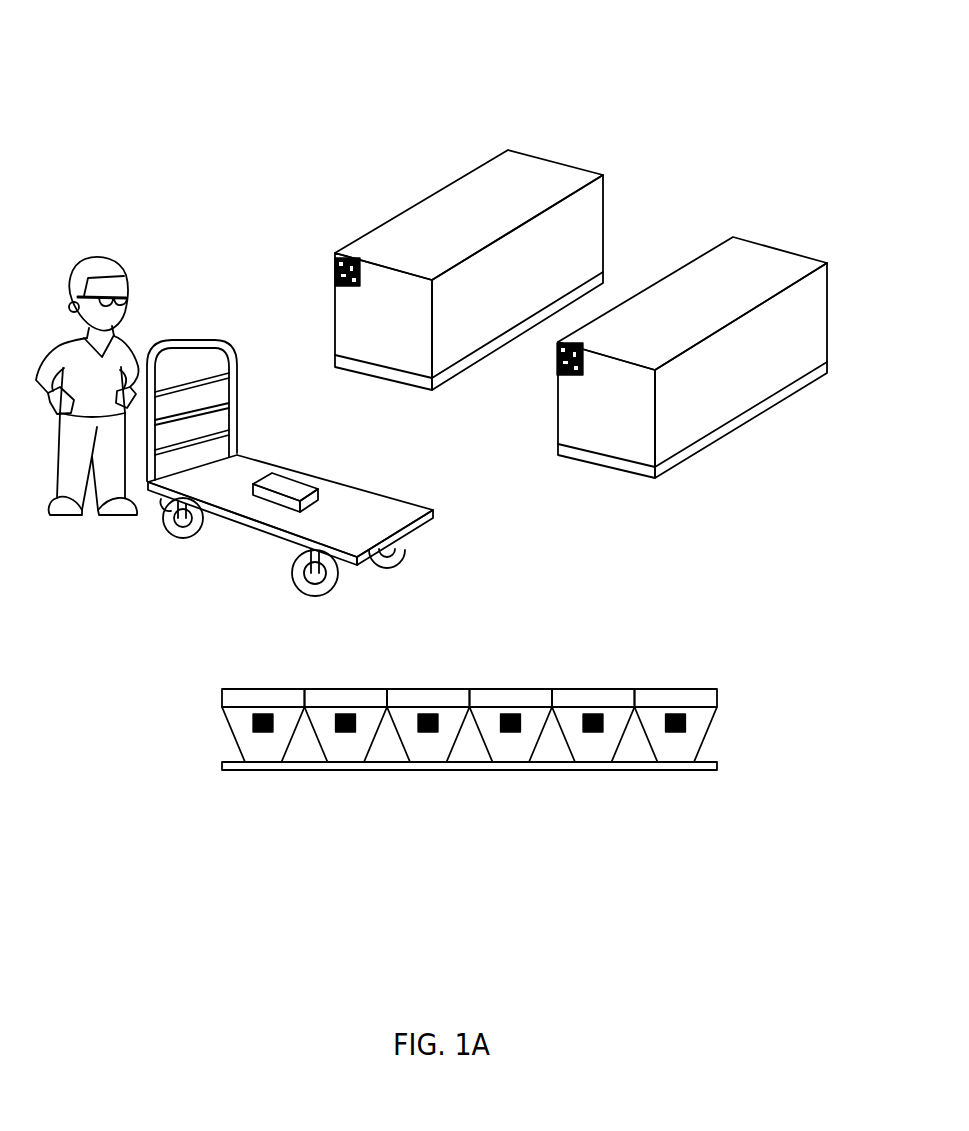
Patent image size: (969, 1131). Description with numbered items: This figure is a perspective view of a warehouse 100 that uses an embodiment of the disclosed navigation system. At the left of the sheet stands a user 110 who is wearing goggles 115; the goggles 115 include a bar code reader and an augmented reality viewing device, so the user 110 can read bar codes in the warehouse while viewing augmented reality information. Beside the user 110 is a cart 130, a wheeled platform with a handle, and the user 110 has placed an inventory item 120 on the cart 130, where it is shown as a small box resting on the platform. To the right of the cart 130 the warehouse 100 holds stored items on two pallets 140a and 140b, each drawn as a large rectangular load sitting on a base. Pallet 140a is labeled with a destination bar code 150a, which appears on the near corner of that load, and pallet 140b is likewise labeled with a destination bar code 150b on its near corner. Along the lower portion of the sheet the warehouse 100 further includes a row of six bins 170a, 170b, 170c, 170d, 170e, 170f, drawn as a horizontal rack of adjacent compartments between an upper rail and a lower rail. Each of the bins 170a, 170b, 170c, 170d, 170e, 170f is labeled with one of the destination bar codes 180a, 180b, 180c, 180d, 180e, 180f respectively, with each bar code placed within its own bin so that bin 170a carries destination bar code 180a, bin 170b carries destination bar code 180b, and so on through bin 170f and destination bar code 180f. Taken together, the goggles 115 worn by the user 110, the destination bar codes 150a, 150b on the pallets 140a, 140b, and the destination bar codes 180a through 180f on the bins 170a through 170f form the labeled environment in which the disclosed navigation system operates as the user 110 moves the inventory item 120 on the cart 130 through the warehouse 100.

The warehouse 100 is at (144, 63).
The user 110 is at (53, 514).
The goggles 115 is at (125, 298).
The inventory item 120 is at (268, 475).
The cart 130 is at (365, 503).
The pallet 140a is at (540, 175).
The pallet 140b is at (753, 258).
The destination bar code 150a is at (335, 270).
The destination bar code 150b is at (557, 364).
The bin 170a is at (263, 690).
The bin 170b is at (347, 690).
The bin 170c is at (431, 690).
The bin 170d is at (509, 690).
The bin 170e is at (595, 690).
The bin 170f is at (668, 690).
The destination bar code 180a is at (253, 723).
The destination bar code 180b is at (337, 729).
The destination bar code 180c is at (430, 729).
The destination bar code 180d is at (514, 730).
The destination bar code 180e is at (595, 729).
The destination bar code 180f is at (688, 727).